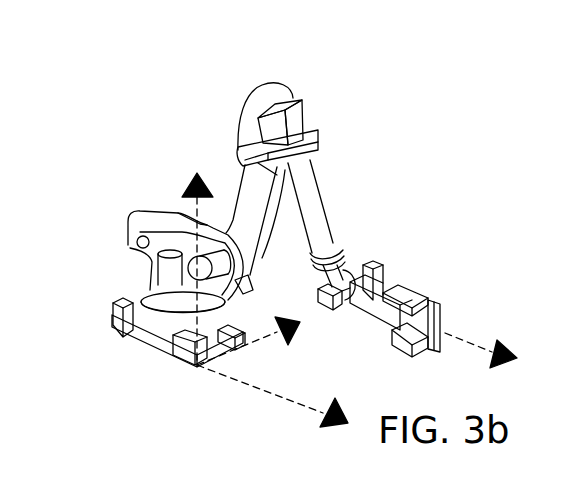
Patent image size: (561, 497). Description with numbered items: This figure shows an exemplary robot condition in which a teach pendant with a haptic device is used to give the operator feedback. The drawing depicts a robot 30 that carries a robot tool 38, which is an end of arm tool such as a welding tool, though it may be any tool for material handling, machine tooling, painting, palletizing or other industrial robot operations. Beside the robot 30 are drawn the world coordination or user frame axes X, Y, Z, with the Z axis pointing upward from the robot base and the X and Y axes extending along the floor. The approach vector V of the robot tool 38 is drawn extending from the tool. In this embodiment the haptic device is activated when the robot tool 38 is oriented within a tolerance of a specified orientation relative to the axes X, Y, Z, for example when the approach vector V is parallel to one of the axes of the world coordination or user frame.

The robot 30 is at (305, 98).
The robot tool 38 is at (375, 260).
The axis X is at (272, 415).
The axis Y is at (254, 341).
The axis Z is at (186, 268).
The approach vector V is at (481, 366).